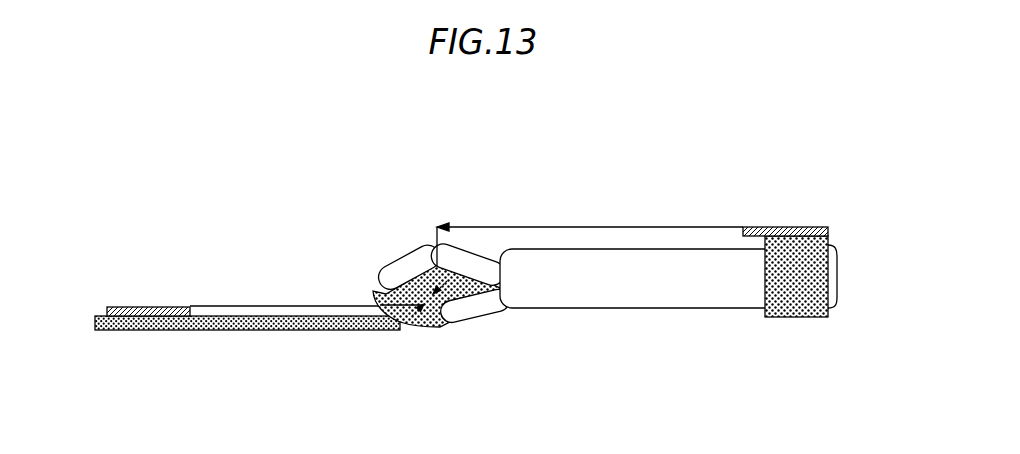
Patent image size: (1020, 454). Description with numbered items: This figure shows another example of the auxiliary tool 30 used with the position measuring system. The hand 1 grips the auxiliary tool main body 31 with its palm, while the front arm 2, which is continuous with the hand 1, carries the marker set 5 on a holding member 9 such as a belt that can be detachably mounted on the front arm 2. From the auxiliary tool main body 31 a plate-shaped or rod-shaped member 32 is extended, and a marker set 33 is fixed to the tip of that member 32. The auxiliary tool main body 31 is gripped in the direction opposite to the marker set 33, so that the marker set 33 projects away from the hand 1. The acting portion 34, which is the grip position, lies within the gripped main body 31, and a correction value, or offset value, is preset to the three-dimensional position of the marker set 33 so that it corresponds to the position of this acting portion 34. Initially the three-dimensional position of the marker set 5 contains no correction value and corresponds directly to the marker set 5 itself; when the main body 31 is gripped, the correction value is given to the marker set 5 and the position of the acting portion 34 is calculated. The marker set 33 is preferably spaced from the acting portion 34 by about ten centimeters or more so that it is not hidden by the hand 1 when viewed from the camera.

The hand 1 is at (632, 244).
The front arm 2 is at (565, 250).
The marker set 5 is at (790, 226).
The holding member 9 is at (833, 243).
The auxiliary tool 30 is at (297, 343).
The auxiliary tool main body 31 is at (423, 327).
The plate-shaped or rod-shaped member 32 is at (213, 331).
The marker set 33 is at (135, 307).
The acting portion 34 is at (440, 308).